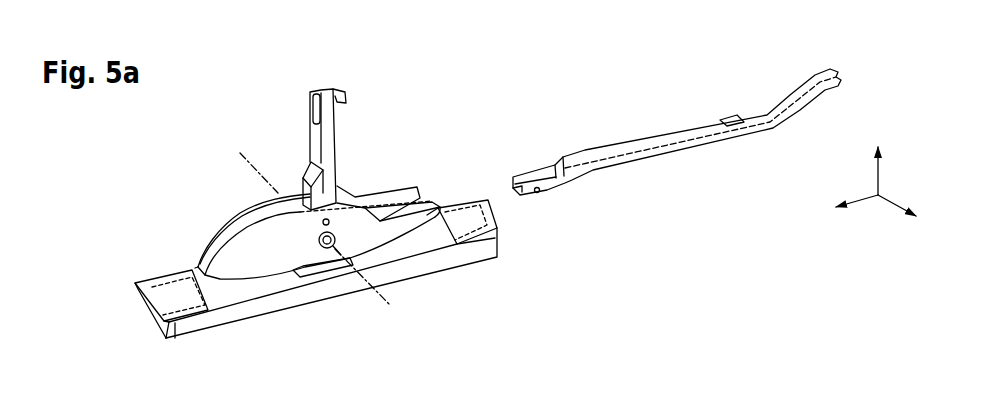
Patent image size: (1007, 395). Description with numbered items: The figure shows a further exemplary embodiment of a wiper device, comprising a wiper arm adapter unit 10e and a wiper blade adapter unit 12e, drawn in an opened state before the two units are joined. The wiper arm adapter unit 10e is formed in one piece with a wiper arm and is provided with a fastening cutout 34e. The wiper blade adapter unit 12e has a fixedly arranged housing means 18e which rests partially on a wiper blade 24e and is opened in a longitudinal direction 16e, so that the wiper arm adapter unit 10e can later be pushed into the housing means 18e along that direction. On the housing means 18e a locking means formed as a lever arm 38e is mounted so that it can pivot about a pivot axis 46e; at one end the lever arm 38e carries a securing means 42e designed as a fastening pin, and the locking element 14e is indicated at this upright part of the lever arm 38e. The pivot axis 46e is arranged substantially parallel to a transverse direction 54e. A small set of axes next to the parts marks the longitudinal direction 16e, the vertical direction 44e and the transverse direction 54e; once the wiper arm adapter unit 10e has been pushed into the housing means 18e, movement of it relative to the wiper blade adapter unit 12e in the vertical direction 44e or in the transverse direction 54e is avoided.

The wiper arm adapter unit 10e is at (628, 108).
The wiper blade adapter unit 12e is at (190, 166).
The locking element 14e is at (358, 91).
The longitudinal direction 16e is at (860, 199).
The housing means 18e is at (203, 246).
The wiper blade 24e is at (145, 304).
The fastening cutout 34e is at (728, 116).
The lever arm 38e is at (313, 143).
The securing means 42e is at (333, 89).
The vertical direction 44e is at (881, 170).
The pivot axis 46e is at (390, 305).
The transverse direction 54e is at (897, 198).